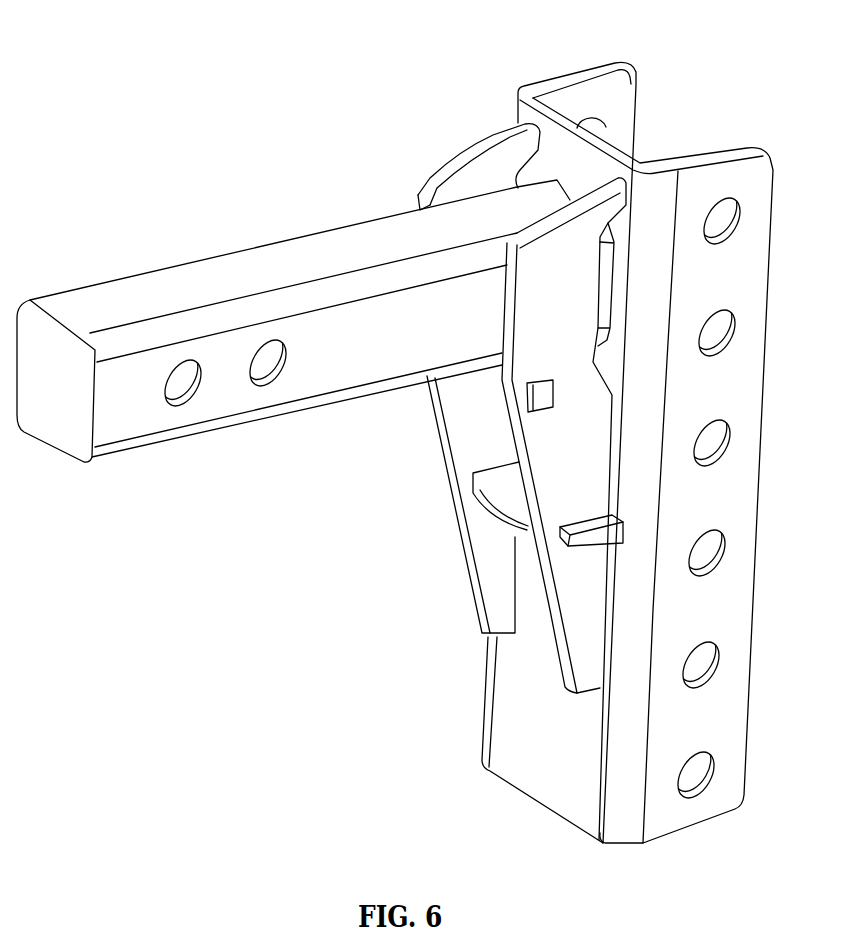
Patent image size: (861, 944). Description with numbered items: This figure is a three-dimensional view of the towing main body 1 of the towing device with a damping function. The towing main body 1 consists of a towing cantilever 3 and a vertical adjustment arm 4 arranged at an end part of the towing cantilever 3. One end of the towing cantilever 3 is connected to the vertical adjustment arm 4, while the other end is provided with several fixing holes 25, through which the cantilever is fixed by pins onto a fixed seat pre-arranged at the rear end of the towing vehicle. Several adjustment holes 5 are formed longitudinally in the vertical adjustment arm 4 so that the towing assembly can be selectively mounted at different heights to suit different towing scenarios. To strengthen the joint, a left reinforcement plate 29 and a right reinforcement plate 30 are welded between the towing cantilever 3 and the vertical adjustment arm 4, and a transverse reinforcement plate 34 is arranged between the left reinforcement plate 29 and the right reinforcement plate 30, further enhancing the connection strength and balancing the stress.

The towing main body 1 is at (352, 105).
The towing cantilever 3 is at (318, 250).
The vertical adjustment arm 4 is at (747, 392).
The adjustment holes 5 is at (718, 327).
The fixing holes 25 is at (197, 375).
The left reinforcement plate 29 is at (480, 447).
The right reinforcement plate 30 is at (573, 612).
The transverse reinforcement plate 34 is at (510, 493).